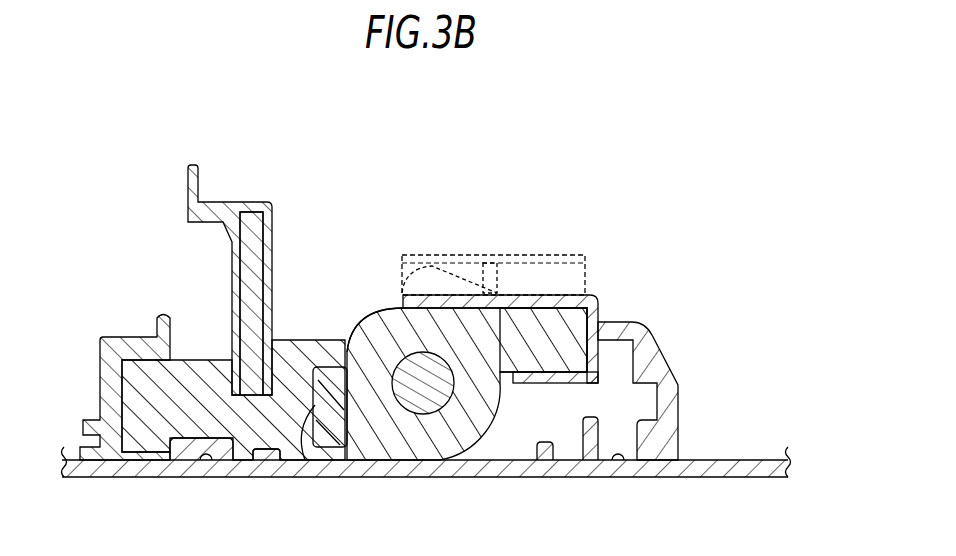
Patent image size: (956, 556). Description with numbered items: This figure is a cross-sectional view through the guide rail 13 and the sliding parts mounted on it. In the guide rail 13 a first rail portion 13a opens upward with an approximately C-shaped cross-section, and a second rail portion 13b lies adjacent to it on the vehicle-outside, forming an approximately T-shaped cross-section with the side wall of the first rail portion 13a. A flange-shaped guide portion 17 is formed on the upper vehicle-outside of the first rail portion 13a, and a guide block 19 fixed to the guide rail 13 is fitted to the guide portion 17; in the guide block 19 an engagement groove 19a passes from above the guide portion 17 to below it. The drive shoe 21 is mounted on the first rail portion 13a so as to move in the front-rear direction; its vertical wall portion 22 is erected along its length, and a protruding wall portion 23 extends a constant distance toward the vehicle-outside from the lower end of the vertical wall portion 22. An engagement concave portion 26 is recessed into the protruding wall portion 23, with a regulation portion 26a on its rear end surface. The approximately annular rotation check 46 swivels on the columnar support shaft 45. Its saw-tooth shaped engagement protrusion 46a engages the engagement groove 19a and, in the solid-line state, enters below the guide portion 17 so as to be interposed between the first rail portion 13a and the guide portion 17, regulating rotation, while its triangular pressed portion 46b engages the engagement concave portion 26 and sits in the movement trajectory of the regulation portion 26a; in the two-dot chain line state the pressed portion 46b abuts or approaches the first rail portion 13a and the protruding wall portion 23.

The guide rail 13 is at (735, 460).
The first rail portion 13a is at (207, 462).
The second rail portion 13b is at (618, 462).
The guide portion 17 is at (515, 292).
The guide block 19 is at (563, 255).
The engagement groove 19a is at (490, 262).
The drive shoe 21 is at (229, 202).
The vertical wall portion 22 is at (272, 245).
The protruding wall portion 23 is at (310, 340).
The engagement concave portion 26 is at (351, 462).
The regulation portion 26a is at (350, 346).
The support shaft 45 is at (426, 462).
The rotation check 46 is at (500, 407).
The engagement protrusion 46a is at (538, 358).
The pressed portion 46b is at (305, 461).